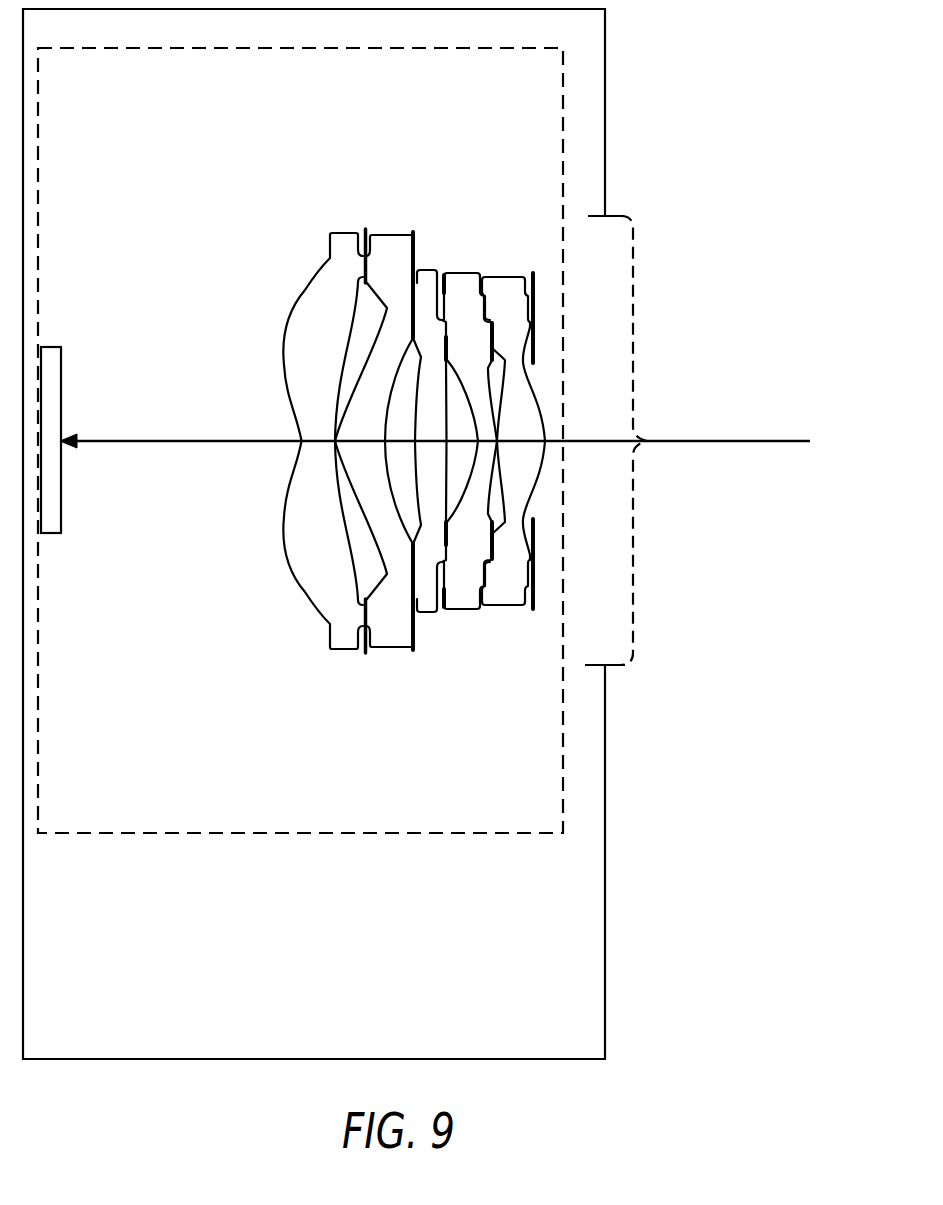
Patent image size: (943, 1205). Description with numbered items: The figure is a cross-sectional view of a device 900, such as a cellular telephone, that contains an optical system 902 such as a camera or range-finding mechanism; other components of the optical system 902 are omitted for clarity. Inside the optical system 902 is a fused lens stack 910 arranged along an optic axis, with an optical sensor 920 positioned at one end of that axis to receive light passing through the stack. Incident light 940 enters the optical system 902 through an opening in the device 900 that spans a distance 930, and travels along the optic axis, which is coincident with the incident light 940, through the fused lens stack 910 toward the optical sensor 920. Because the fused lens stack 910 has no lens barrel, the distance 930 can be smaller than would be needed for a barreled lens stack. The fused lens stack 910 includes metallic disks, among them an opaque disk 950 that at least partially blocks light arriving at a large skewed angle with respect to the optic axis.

The device 900 is at (100, 40).
The optical system 902 is at (119, 805).
The fused lens stack 910 is at (560, 207).
The optical sensor 920 is at (60, 383).
The distance 930 is at (633, 347).
The incident light 940 is at (695, 440).
The disk 950 is at (536, 286).